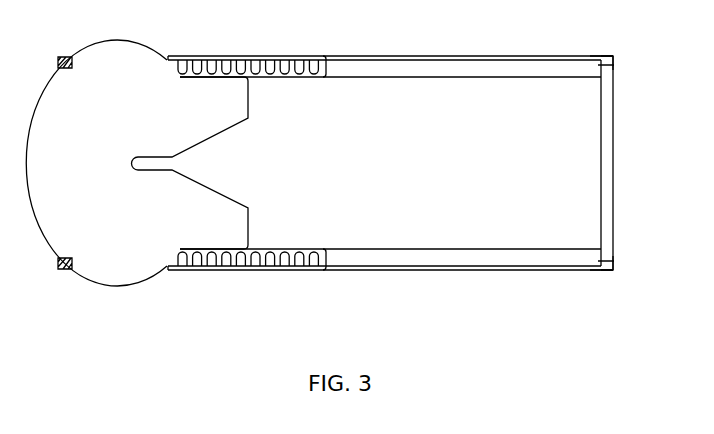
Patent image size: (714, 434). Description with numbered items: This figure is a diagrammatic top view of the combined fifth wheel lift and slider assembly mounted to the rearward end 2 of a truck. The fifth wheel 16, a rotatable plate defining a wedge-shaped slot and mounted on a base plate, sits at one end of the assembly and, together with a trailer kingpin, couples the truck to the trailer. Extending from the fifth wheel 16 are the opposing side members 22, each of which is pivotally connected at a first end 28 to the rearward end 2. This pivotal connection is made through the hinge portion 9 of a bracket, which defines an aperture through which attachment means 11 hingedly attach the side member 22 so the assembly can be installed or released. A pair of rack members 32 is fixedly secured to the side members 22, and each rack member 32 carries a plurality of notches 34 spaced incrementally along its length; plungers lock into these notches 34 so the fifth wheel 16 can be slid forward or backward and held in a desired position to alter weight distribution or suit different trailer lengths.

The rearward end 2 is at (606, 159).
The hinge portion 9 is at (614, 266).
The attachment means 11 is at (595, 264).
The fifth wheel 16 is at (137, 163).
The opposing side member 22 is at (385, 287).
The first end 28 is at (587, 281).
The rack member 32 is at (180, 288).
The notches 34 is at (256, 262).